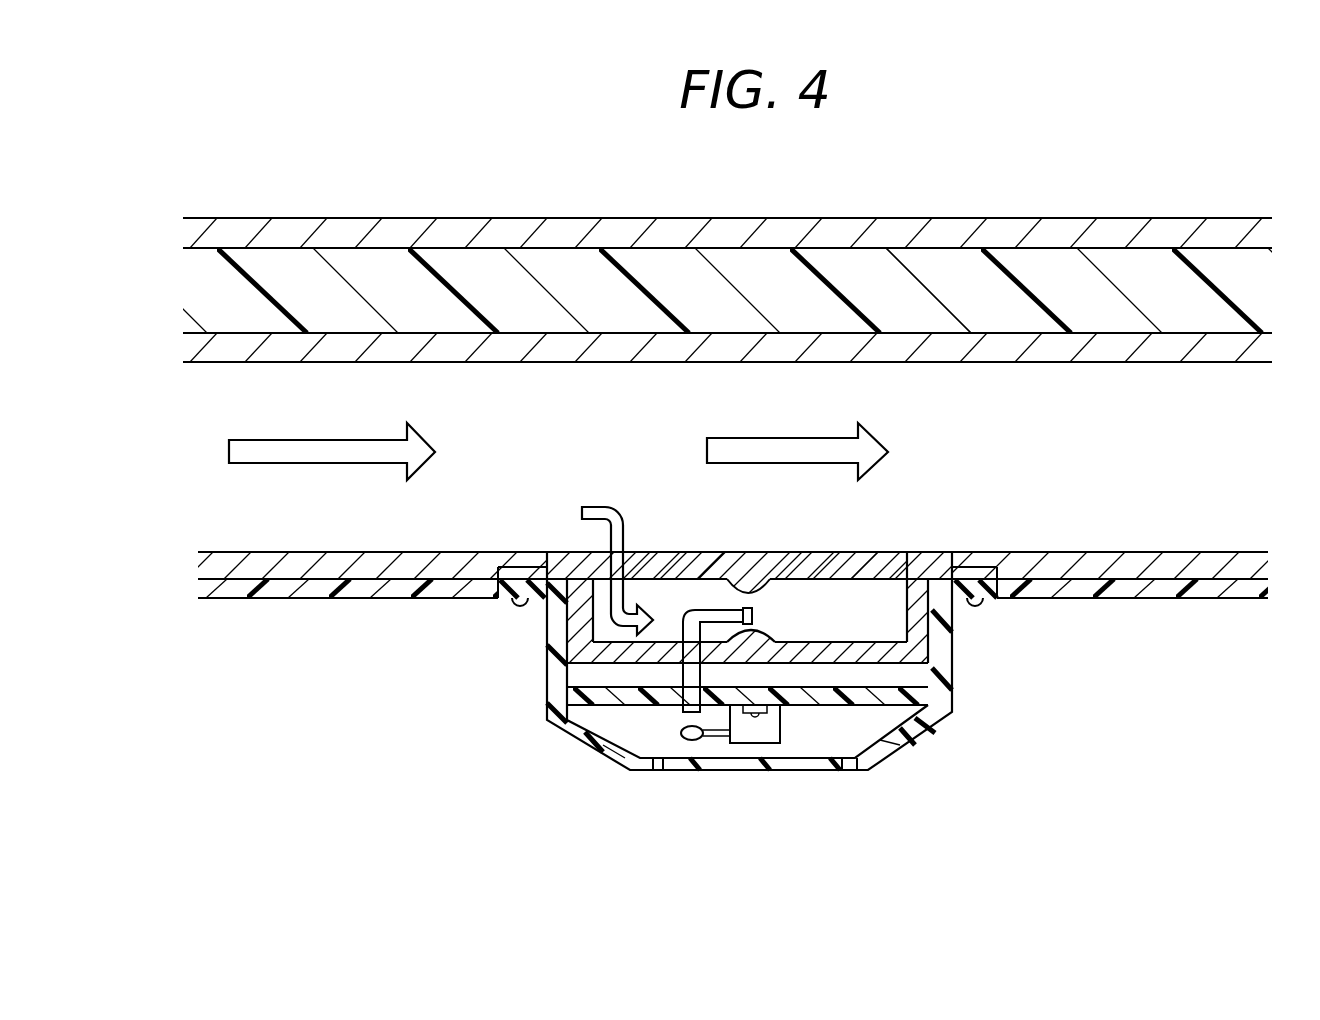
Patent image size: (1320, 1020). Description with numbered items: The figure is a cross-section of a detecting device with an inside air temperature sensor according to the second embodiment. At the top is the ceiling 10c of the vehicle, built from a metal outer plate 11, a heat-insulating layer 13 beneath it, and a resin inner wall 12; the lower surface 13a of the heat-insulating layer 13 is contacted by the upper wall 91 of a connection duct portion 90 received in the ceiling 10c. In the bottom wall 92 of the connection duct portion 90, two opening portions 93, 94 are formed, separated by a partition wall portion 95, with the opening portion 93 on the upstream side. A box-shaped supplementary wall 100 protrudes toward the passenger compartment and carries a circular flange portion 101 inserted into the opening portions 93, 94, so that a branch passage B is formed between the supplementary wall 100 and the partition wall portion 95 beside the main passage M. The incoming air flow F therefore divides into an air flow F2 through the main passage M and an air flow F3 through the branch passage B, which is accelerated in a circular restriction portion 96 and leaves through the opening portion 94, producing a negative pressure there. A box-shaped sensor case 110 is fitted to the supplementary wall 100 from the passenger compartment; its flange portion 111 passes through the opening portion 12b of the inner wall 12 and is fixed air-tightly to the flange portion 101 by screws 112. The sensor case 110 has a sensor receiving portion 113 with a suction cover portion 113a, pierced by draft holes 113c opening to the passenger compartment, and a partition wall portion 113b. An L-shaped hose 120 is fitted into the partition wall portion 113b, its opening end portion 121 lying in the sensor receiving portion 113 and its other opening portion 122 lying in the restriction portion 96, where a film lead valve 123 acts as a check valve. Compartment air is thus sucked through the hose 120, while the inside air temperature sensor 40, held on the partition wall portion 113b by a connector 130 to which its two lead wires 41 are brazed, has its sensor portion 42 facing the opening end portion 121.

The ceiling 10c is at (727, 280).
The outer plate 11 is at (978, 238).
The heat-insulating layer 13 is at (1073, 285).
The lower surface of heat-insulating layer 13a is at (1213, 335).
The upper wall 91 is at (898, 350).
The connection duct portion 90 is at (733, 584).
The bottom wall 92 is at (1104, 568).
The inner wall 12 is at (1197, 590).
The opening portion 12b is at (985, 604).
The flange portion 111 is at (502, 601).
The screws 112 is at (521, 607).
The opening portion 93 is at (680, 565).
The partition wall portion 95 is at (705, 560).
The opening portion 94 is at (812, 575).
The supplementary wall 100 is at (763, 665).
The flange portion 101 is at (924, 573).
The restriction portion 96 is at (757, 648).
The hose 120 is at (690, 674).
The sensor case 110 is at (707, 723).
The sensor receiving portion 113 is at (736, 784).
The suction cover portion 113a is at (633, 763).
The partition wall portion 113b is at (878, 700).
The draft holes 113c is at (657, 764).
The opening portion of hose 122 is at (644, 626).
The lead valve 123 is at (757, 610).
The opening end portion of hose 121 is at (683, 713).
The inside air temperature sensor 40 is at (660, 792).
The lead wires 41 is at (721, 738).
The sensor portion 42 is at (694, 741).
The connector 130 is at (772, 726).
The air flow F is at (295, 452).
The air flow F2 is at (785, 452).
The air flow F3 is at (592, 508).
The main passage M is at (1130, 483).
The branch passage B is at (824, 627).